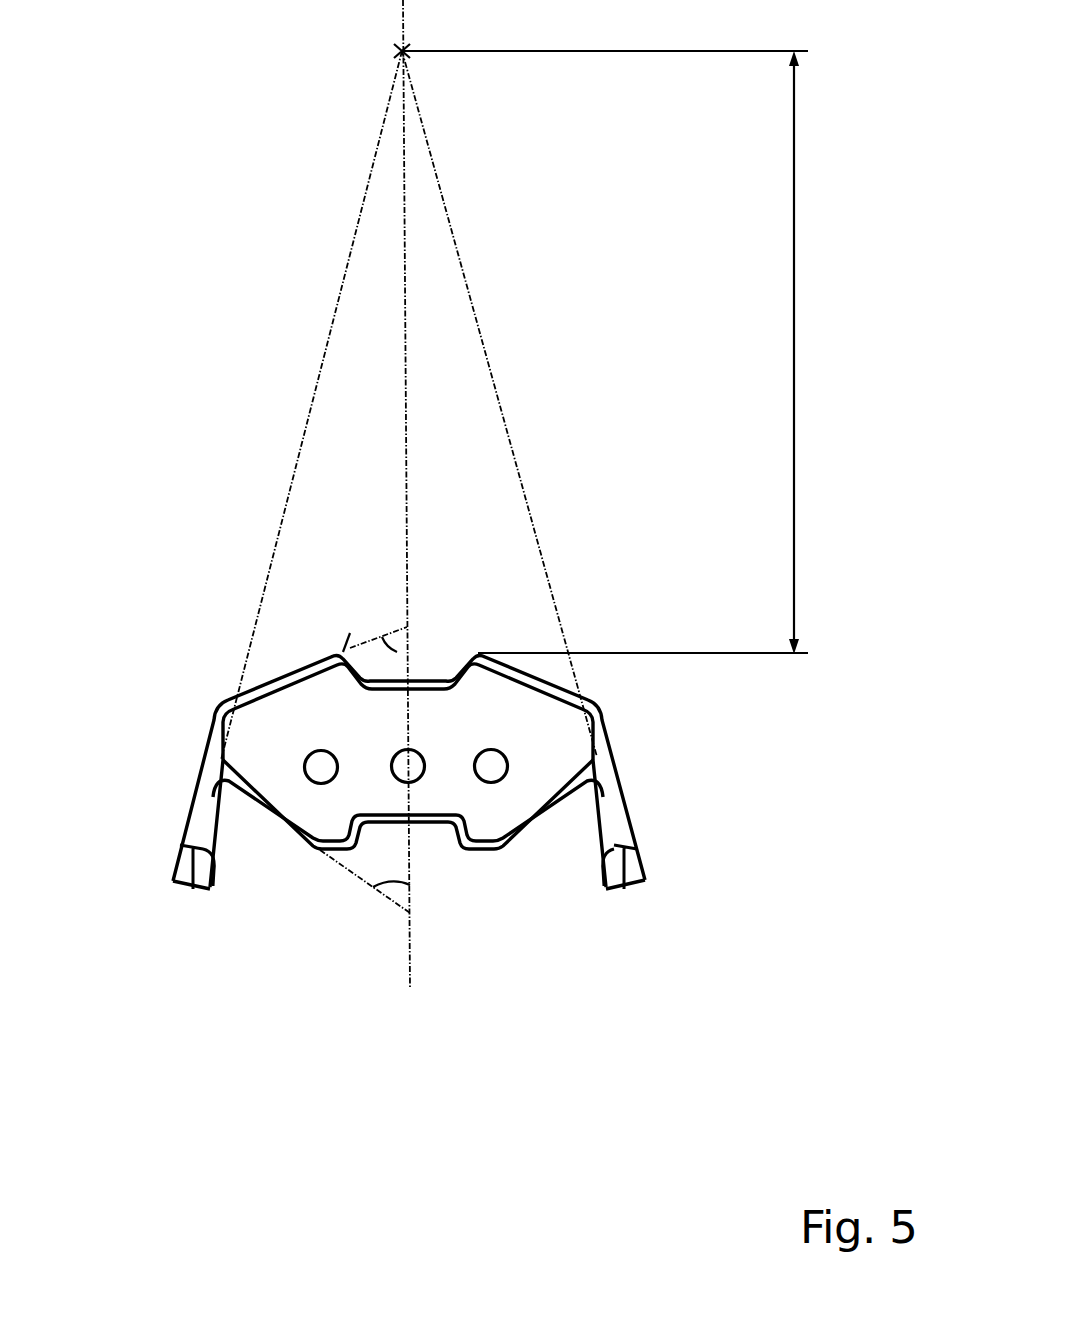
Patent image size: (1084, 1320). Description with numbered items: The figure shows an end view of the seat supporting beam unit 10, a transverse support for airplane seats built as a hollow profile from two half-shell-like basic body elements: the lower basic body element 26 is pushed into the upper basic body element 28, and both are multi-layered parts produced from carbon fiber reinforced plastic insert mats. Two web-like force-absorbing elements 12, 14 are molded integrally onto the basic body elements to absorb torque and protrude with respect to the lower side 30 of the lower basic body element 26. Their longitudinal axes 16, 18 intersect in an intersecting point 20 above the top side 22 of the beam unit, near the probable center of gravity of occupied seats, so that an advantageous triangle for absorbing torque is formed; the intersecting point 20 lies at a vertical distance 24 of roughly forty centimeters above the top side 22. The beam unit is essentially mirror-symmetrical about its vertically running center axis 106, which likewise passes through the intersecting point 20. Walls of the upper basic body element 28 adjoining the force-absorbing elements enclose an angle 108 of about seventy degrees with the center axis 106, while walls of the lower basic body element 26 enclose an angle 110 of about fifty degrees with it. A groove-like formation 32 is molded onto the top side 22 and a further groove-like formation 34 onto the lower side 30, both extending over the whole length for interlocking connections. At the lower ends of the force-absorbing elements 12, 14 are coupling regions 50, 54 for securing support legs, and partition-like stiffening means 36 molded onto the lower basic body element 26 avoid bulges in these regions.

The seat supporting beam unit 10 is at (645, 745).
The force-absorbing element 12 is at (179, 910).
The force-absorbing element 14 is at (642, 910).
The longitudinal axis 16 is at (263, 600).
The longitudinal axis 18 is at (549, 587).
The intersecting point 20 is at (402, 51).
The top side 22 is at (343, 653).
The vertical distance 24 is at (803, 488).
The half-shell-like basic body element 26 is at (528, 842).
The half-shell-like basic body element 28 is at (268, 668).
The lower side 30 is at (276, 816).
The formation 32 is at (427, 681).
The formation 34 is at (432, 822).
The stiffening means 36 is at (298, 783).
The coupling region 50 is at (612, 878).
The coupling region 54 is at (203, 877).
The center axis 106 is at (411, 952).
The angle 108 is at (398, 652).
The angle 110 is at (373, 887).